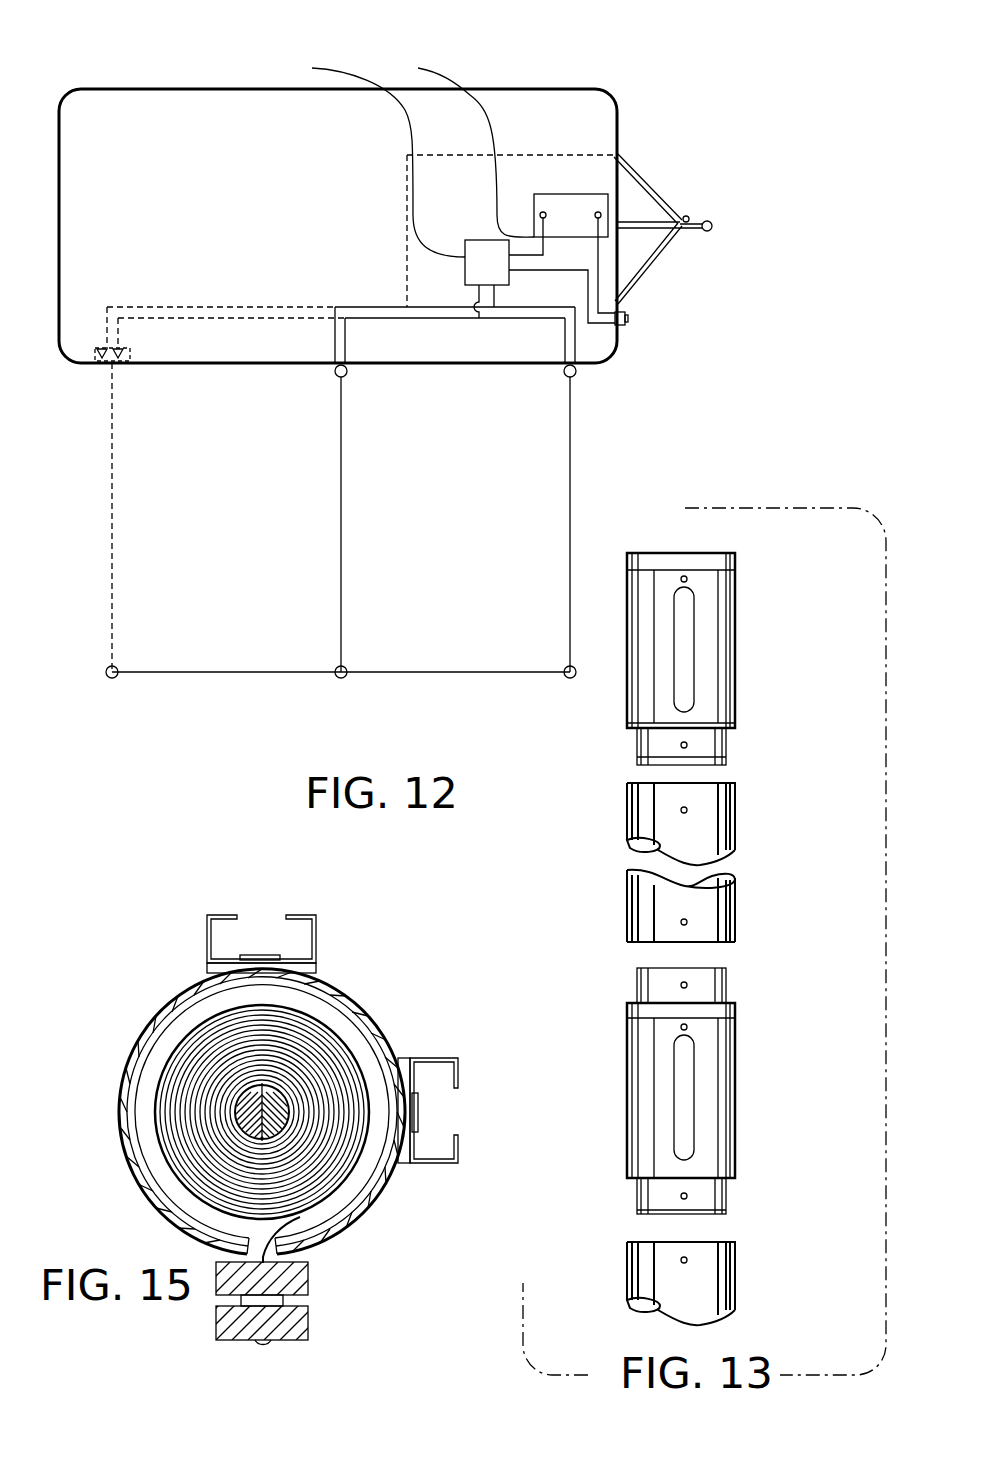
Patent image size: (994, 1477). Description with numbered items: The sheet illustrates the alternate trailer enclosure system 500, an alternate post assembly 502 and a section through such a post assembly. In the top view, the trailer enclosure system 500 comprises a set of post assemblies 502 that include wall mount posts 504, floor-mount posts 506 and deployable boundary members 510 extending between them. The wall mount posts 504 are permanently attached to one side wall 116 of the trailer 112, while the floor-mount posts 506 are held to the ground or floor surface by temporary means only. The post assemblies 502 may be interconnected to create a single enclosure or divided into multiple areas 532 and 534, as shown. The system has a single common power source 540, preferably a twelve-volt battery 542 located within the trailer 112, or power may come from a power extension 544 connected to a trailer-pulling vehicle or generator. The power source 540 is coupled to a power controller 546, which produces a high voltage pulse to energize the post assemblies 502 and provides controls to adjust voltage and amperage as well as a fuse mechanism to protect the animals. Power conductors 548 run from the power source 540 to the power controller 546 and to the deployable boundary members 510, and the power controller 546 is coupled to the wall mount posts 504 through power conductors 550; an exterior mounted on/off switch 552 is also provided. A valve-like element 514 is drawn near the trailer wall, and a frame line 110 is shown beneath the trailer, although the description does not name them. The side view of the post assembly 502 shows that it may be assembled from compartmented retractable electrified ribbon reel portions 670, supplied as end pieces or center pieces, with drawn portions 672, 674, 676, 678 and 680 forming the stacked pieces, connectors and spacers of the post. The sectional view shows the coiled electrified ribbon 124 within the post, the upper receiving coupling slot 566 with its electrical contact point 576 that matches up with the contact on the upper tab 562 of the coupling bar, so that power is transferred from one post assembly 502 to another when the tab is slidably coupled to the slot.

In FIG. 12, the trailer 112 is at (160, 96).
In FIG. 12, the power source 540 is at (575, 175).
In FIG. 12, the power controller 546 is at (367, 156).
In FIG. 12, the power conductors 548 is at (676, 272).
In FIG. 12, the power conductors 550 is at (378, 308).
In FIG. 12, the valve 514 is at (203, 366).
In FIG. 12, the side wall 116 is at (403, 365).
In FIG. 12, the wall mount posts 504 is at (335, 373).
In FIG. 12, the frame leg 110 is at (341, 478).
In FIG. 12, the deployable boundary members 510 is at (572, 470).
In FIG. 12, the floor-mount posts 506 is at (338, 678).
In FIG. 12, the area 534 is at (247, 552).
In FIG. 12, the area 532 is at (480, 544).
In FIG. 12, the trailer enclosure system 500 is at (148, 719).
In FIG. 12, the battery 542 is at (598, 180).
In FIG. 12, the power extension 544 is at (618, 155).
In FIG. 12, the on/off switch 552 is at (628, 318).
In FIG. 13, the post assembly 502 is at (760, 545).
In FIG. 15, the post assembly 502 is at (135, 1040).
In FIG. 13, the compartmented retractable electrified ribbon reel portion 670 is at (737, 608).
In FIG. 13, the first clip 672 is at (798, 647).
In FIG. 13, the tab 676 is at (635, 740).
In FIG. 13, the hole 678 is at (686, 745).
In FIG. 13, the clip segment 680 is at (625, 806).
In FIG. 13, the second clip 674 is at (752, 1155).
In FIG. 15, the hose coil 124 is at (160, 1112).
In FIG. 15, the upper receiving coupling slot 566 is at (207, 934).
In FIG. 15, the electrical contact point 576 is at (255, 958).
In FIG. 15, the upper tab 562 is at (308, 1284).